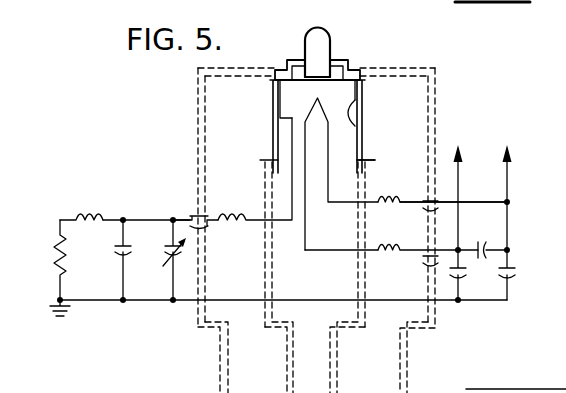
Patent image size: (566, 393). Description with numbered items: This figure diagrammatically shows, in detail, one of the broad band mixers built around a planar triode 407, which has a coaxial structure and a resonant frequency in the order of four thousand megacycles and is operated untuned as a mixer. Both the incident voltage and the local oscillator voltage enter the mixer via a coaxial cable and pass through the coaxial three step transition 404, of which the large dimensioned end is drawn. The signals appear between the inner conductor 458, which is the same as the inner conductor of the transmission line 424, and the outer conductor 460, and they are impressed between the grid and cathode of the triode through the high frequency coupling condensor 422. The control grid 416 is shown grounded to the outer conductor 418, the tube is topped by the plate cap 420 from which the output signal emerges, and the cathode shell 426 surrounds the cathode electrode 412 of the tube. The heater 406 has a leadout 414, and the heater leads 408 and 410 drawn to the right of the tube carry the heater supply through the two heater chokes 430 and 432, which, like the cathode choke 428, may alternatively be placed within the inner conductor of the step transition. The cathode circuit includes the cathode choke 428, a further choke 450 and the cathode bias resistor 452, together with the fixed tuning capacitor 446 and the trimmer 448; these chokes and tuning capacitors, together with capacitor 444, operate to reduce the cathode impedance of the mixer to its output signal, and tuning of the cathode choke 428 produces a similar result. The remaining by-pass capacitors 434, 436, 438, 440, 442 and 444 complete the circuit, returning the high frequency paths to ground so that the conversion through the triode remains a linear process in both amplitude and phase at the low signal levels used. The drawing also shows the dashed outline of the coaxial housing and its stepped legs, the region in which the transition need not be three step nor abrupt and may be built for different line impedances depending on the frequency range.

The three step transition 404 is at (328, 214).
The heater 406 is at (285, 113).
The planar triode 407 is at (340, 30).
The output lead inductor 408 is at (414, 199).
The output lead 410 is at (408, 253).
The cathode 412 is at (341, 174).
The heater leadout 414 is at (210, 214).
The control grid 416 is at (352, 62).
The outer conductor 418 is at (398, 70).
The plate cap 420 is at (313, 27).
The high frequency coupling condensor 422 is at (349, 112).
The inner conductor of the transmission line 424 is at (370, 163).
The cathode shell 426 is at (356, 131).
The cathode choke 428 is at (235, 224).
The heater choke 430 is at (388, 208).
The heater choke 432 is at (388, 256).
The by pass capacitor 434 is at (430, 200).
The by pass capacitor 436 is at (432, 260).
The by pass capacitor 438 is at (489, 262).
The by pass capacitor 440 is at (460, 278).
The by pass capacitor 442 is at (512, 278).
The by pass capacitor 444 is at (192, 213).
The fixed tuning capacitor 446 is at (112, 258).
The trimmer 448 is at (162, 260).
The choke 450 is at (78, 217).
The cathode bias resistor 452 is at (48, 260).
The inner conductor 458 is at (288, 357).
The outer conductor 460 is at (227, 358).